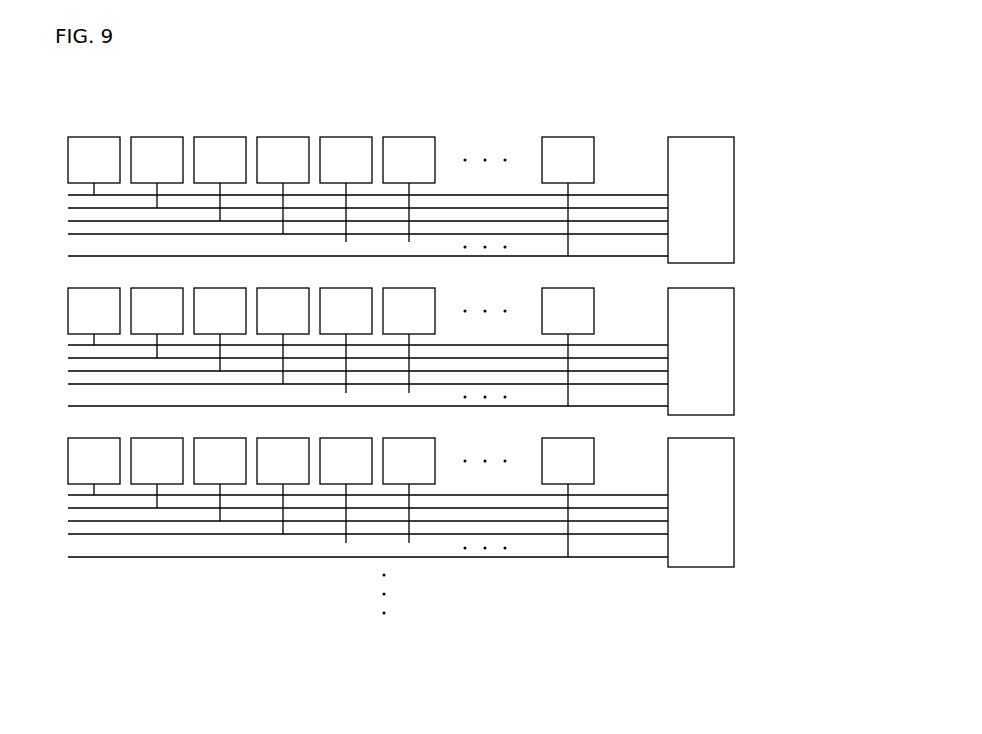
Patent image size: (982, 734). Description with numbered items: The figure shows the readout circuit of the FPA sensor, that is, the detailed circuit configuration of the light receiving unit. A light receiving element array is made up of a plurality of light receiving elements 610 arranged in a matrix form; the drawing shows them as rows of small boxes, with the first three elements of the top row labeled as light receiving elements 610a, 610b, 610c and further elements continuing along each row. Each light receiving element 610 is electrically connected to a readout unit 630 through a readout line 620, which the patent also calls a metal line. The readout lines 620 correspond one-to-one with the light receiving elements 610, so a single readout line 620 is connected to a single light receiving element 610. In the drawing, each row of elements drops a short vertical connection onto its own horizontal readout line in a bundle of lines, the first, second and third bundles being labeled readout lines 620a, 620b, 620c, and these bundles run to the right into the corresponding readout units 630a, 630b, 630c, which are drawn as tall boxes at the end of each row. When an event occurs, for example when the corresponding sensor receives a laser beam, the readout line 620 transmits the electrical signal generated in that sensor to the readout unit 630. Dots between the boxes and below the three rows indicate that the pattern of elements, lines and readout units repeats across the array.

The light receiving element 610 is at (324, 276).
The light receiving element 610a is at (82, 137).
The light receiving element 610b is at (162, 137).
The light receiving element 610c is at (228, 137).
The readout line 620 is at (377, 308).
The readout line 620a is at (613, 193).
The readout line 620b is at (613, 343).
The readout line 620c is at (613, 493).
The readout unit 630 is at (736, 311).
The readout unit 630a is at (734, 172).
The readout unit 630b is at (734, 322).
The readout unit 630c is at (734, 473).